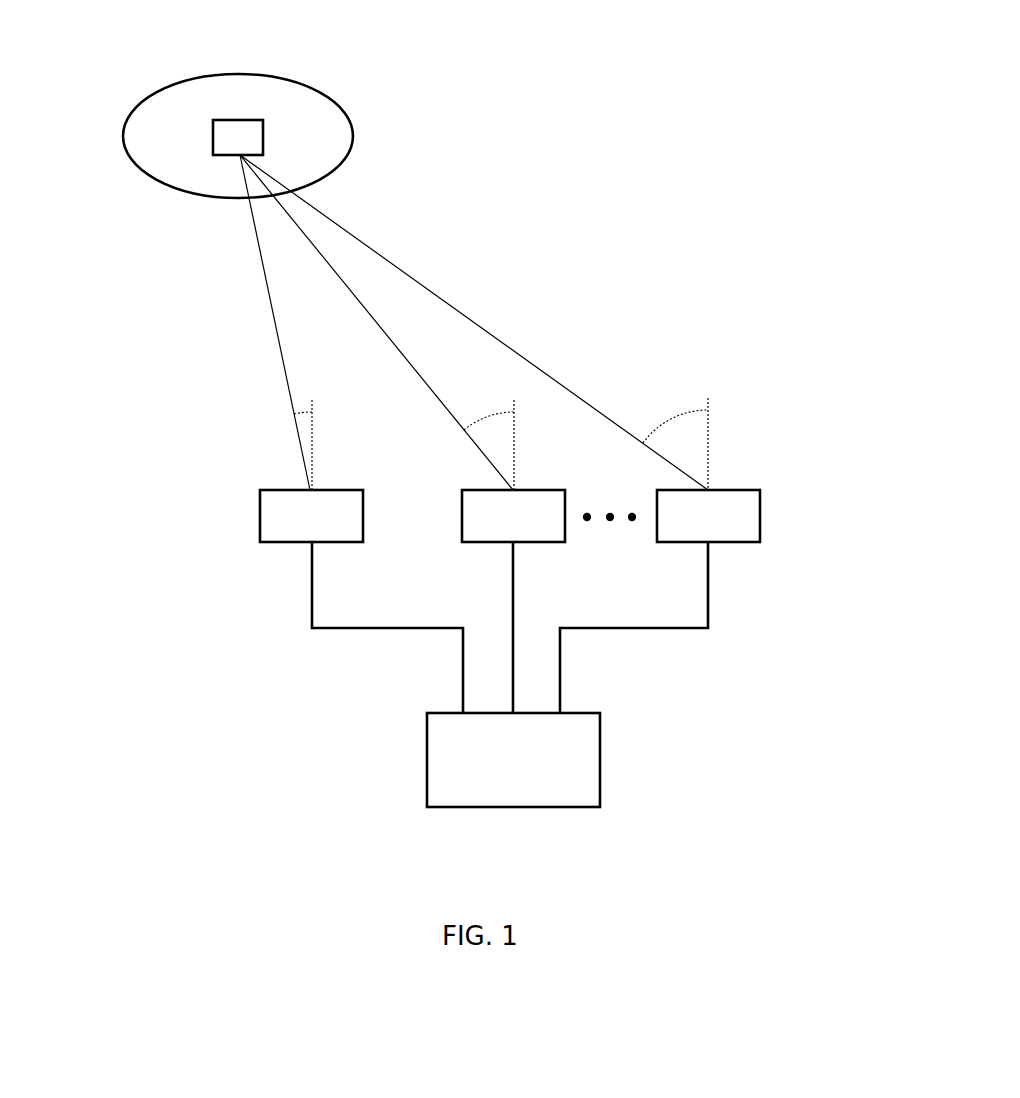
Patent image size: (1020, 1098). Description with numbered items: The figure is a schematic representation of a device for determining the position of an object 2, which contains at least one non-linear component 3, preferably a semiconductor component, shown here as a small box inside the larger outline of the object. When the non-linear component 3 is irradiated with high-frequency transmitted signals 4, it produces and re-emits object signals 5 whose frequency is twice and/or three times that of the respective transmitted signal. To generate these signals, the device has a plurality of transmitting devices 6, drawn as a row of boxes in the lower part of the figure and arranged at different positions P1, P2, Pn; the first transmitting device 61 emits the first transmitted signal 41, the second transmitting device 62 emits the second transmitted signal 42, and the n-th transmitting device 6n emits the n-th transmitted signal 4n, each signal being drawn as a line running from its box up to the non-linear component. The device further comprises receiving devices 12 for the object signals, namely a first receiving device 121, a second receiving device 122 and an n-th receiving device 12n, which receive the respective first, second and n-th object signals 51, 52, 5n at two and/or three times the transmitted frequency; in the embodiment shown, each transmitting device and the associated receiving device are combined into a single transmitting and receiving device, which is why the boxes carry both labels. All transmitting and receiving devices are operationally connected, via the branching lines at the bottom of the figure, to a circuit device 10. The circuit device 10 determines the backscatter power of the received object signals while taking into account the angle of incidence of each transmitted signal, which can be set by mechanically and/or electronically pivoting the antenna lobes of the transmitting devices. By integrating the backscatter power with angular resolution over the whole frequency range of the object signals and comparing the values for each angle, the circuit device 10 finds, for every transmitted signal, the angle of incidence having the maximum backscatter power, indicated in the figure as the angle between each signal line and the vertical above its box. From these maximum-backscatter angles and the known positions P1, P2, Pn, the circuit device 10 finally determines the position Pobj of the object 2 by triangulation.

The object 2 is at (187, 87).
The non-linear component 3 is at (320, 122).
The position of the object Pobj is at (156, 103).
The transmitted signals 4 is at (430, 322).
The first transmitted signal 41 is at (231, 322).
The second transmitted signal 42 is at (376, 322).
The n-th transmitted signal 4n is at (474, 322).
The object signals 5 is at (430, 322).
The first object signal 51 is at (262, 262).
The second object signal 52 is at (363, 310).
The n-th object signal 5n is at (513, 349).
The transmitting devices 6 is at (519, 519).
The first transmitting device 61 is at (312, 519).
The second transmitting device 62 is at (522, 535).
The n-th transmitting device 6n is at (773, 529).
The receiving devices 12 is at (519, 519).
The first receiving device 121 is at (312, 519).
The second receiving device 122 is at (522, 535).
The n-th receiving device 12n is at (773, 529).
The first position P1 is at (255, 486).
The second position P2 is at (583, 560).
The n-th position Pn is at (710, 522).
The circuit device 10 is at (578, 797).